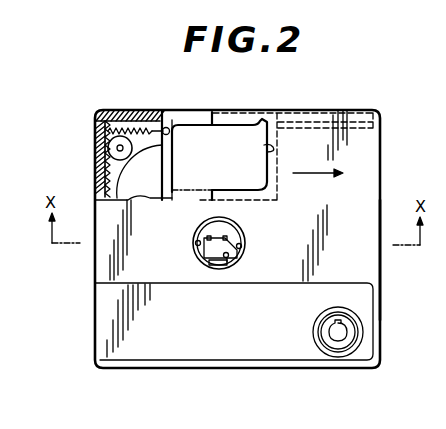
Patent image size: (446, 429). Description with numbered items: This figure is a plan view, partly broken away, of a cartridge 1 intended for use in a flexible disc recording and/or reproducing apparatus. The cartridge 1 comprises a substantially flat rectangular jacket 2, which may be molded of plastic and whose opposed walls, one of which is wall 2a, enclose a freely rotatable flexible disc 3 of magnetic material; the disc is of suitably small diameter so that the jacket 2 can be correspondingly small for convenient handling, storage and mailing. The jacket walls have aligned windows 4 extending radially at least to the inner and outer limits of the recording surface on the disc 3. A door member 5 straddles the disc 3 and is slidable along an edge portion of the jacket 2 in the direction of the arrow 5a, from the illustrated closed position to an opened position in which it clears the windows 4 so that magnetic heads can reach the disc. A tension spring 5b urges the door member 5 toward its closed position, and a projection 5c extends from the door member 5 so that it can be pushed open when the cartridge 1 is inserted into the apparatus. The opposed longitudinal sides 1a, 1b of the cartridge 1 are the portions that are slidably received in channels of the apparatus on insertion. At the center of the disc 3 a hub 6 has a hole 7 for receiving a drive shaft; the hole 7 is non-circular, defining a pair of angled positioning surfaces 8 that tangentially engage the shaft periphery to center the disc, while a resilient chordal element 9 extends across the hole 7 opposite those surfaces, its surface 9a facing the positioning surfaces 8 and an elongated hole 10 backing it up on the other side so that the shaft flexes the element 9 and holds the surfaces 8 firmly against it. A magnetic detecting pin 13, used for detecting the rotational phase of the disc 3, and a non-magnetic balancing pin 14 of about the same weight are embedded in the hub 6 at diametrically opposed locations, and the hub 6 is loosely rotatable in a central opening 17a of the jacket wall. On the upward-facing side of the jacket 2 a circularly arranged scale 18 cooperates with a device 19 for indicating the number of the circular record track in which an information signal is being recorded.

The cartridge 1 is at (370, 108).
The longitudinal side of cartridge 1a is at (329, 94).
The longitudinal side of cartridge 1b is at (287, 365).
The jacket 2 is at (384, 171).
The wall of jacket 2a is at (370, 193).
The flexible disc 3 is at (140, 178).
The windows 4 is at (270, 149).
The door member 5 is at (224, 152).
The arrow 5a is at (330, 197).
The tension spring 5b is at (118, 130).
The projection 5c is at (164, 110).
The hub 6 is at (201, 261).
The hole 7 is at (229, 257).
The positioning surfaces 8 is at (211, 237).
The resilient chordal element 9 is at (229, 264).
The surface of chordal element 9a is at (228, 238).
The elongated hole 10 is at (217, 267).
The magnetic detecting pin 13 is at (198, 240).
The non-magnetic balancing pin 14 is at (242, 246).
The central opening 17a is at (248, 245).
The scale 18 is at (362, 308).
The indicating device 19 is at (363, 336).